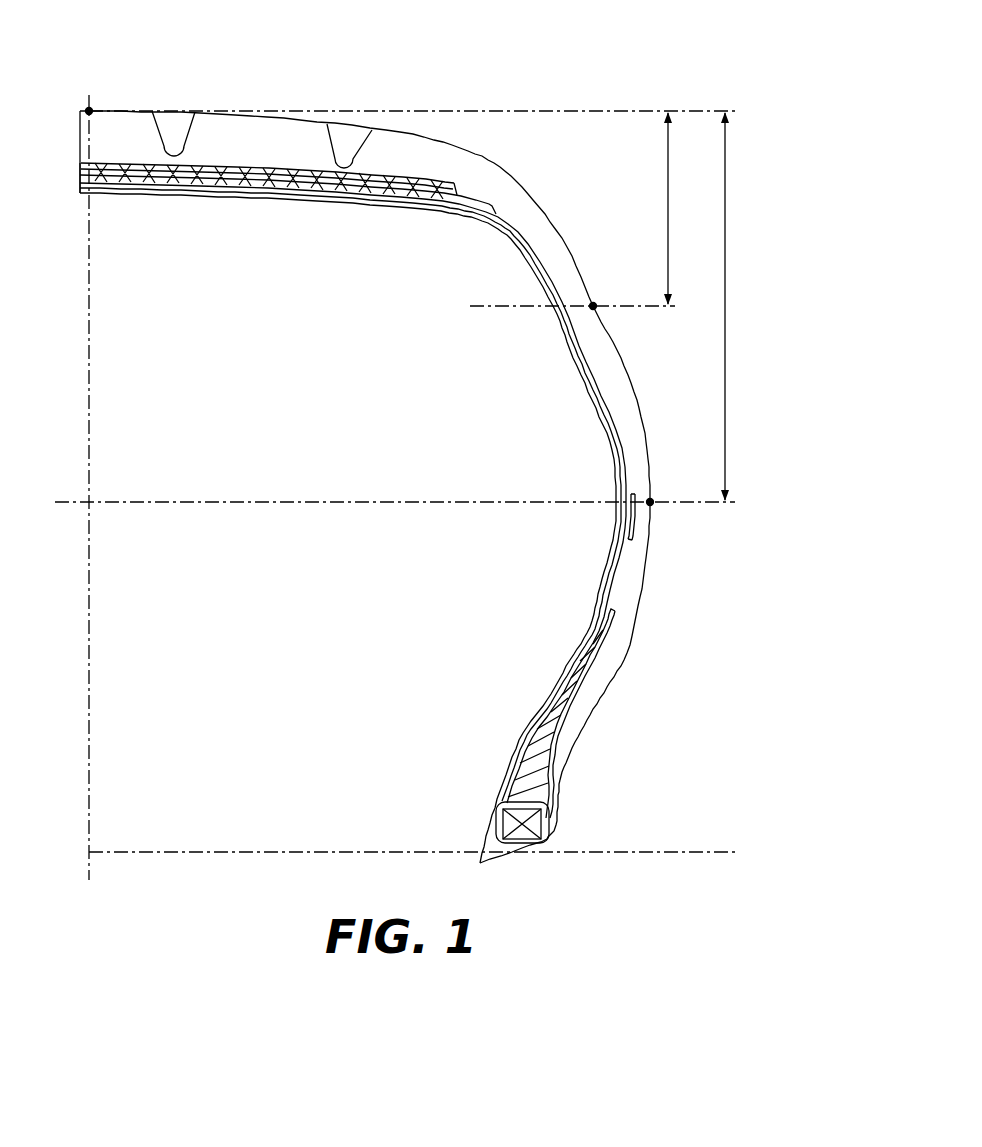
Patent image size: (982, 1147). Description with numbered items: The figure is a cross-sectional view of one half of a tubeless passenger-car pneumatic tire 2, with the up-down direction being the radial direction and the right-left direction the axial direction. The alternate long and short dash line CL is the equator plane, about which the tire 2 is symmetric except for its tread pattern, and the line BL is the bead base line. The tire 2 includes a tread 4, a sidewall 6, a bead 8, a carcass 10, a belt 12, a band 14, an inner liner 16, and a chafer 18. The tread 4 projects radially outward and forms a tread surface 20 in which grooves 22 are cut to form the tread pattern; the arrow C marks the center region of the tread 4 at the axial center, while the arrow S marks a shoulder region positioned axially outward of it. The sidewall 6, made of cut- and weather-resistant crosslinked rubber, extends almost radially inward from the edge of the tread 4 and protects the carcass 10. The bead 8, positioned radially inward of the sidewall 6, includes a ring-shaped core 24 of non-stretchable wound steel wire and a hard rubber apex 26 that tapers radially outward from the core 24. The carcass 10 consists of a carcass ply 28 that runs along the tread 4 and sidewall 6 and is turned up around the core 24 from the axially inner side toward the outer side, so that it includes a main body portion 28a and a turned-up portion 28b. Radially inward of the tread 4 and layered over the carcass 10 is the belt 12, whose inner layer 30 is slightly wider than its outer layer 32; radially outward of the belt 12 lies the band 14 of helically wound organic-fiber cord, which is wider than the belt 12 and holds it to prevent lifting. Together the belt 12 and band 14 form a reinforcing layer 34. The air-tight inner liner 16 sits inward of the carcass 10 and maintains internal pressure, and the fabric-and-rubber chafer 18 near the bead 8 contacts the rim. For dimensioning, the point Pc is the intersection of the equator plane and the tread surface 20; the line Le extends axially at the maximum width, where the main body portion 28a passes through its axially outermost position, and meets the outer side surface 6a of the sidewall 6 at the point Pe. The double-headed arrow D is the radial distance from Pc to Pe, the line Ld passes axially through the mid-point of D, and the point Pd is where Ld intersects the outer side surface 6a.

The pneumatic tire 2 is at (659, 27).
The tread 4 is at (296, 118).
The sidewall 6 is at (650, 597).
The outer side surface of sidewall 6a is at (639, 405).
The bead 8 is at (430, 746).
The carcass 10 is at (287, 190).
The belt 12 is at (247, 228).
The band 14 is at (123, 160).
The inner liner 16 is at (360, 206).
The chafer 18 is at (520, 848).
The tread surface 20 is at (255, 117).
The groove 22 is at (188, 130).
The core 24 is at (507, 822).
The apex 26 is at (517, 762).
The carcass ply 28 is at (381, 513).
The main body portion 28a is at (568, 677).
The turned-up portion 28b is at (606, 653).
The inner layer 30 is at (187, 178).
The outer layer 32 is at (223, 178).
The reinforcing layer 34 is at (93, 157).
The center region C is at (110, 108).
The equator plane CL is at (91, 705).
The point Pc is at (89, 108).
The point Pd is at (595, 303).
The straight line Ld is at (650, 318).
The point Pe is at (652, 499).
The straight line Le is at (703, 512).
The bead base line BL is at (653, 850).
The distance D is at (671, 199).
The shoulder region S is at (422, 135).